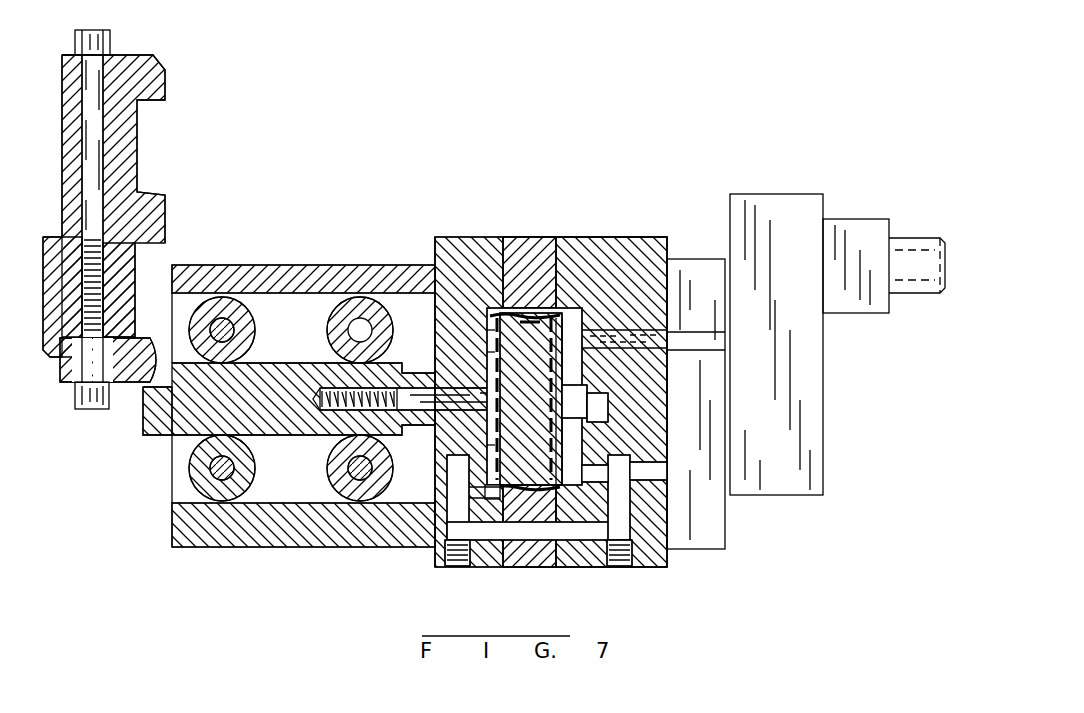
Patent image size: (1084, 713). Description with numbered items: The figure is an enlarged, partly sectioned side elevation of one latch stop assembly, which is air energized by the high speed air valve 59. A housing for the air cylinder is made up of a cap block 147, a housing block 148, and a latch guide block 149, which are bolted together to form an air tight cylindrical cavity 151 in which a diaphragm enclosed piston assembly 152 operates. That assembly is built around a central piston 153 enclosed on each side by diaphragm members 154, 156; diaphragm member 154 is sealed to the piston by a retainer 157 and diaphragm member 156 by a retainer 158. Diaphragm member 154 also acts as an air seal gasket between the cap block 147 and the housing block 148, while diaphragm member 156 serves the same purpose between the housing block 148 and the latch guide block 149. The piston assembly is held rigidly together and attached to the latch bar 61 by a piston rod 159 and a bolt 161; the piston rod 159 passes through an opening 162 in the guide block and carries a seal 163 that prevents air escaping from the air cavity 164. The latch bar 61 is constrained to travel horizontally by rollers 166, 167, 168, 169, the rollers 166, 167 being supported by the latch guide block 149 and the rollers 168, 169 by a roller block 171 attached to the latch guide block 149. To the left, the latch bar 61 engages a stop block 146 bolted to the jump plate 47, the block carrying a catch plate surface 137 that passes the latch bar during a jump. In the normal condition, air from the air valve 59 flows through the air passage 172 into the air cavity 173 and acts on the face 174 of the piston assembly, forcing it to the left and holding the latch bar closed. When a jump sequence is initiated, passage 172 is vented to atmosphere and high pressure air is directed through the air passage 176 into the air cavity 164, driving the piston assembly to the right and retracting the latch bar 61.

The stop block 146 is at (130, 153).
The jump plate 47 is at (130, 262).
The catch plate surface 137 is at (125, 385).
The latch bar 61 is at (152, 418).
The roller block 171 is at (316, 265).
The latch guide block 149 is at (240, 547).
The roller 168 is at (243, 312).
The roller 169 is at (336, 330).
The roller 167 is at (248, 462).
The roller 166 is at (336, 481).
The piston rod 159 is at (398, 382).
The housing block 148 is at (530, 237).
The cap block 147 is at (648, 237).
The diaphragm member 156 is at (495, 318).
The diaphragm enclosed piston assembly 152 is at (545, 447).
The central piston 153 is at (530, 312).
The air tight cylindrical cavity 151 is at (570, 314).
The retainer 157 is at (560, 330).
The bolt 161 is at (590, 396).
The air cavity 164 is at (490, 520).
The diaphragm member 154 is at (565, 567).
The air passage 176 is at (598, 535).
The face 174 is at (575, 445).
The air cavity 173 is at (655, 465).
The retainer 158 is at (484, 338).
The opening 162 is at (484, 355).
The seal 163 is at (484, 447).
The air passage 172 is at (665, 338).
The air valve 59 is at (860, 222).